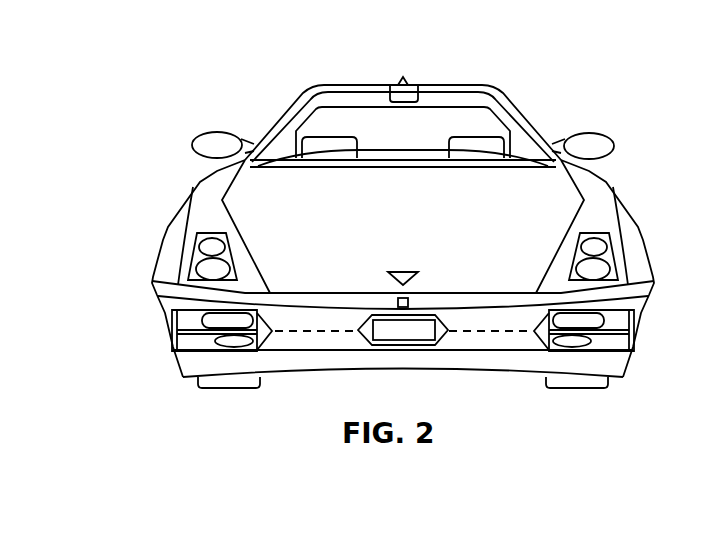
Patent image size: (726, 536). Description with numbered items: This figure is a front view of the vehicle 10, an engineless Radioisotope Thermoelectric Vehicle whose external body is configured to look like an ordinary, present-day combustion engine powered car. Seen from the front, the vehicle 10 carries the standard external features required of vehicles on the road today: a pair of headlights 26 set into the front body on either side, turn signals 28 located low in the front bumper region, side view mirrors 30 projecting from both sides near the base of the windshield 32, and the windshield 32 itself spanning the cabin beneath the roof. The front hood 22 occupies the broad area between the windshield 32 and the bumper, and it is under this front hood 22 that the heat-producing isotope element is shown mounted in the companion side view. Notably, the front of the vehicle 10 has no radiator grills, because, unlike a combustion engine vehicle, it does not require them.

The vehicle 10 is at (396, 220).
The front hood 22 is at (557, 202).
The headlights 26 is at (205, 268).
The turn signals 28 is at (593, 320).
The side view mirrors 30 is at (598, 133).
The windshield 32 is at (503, 118).